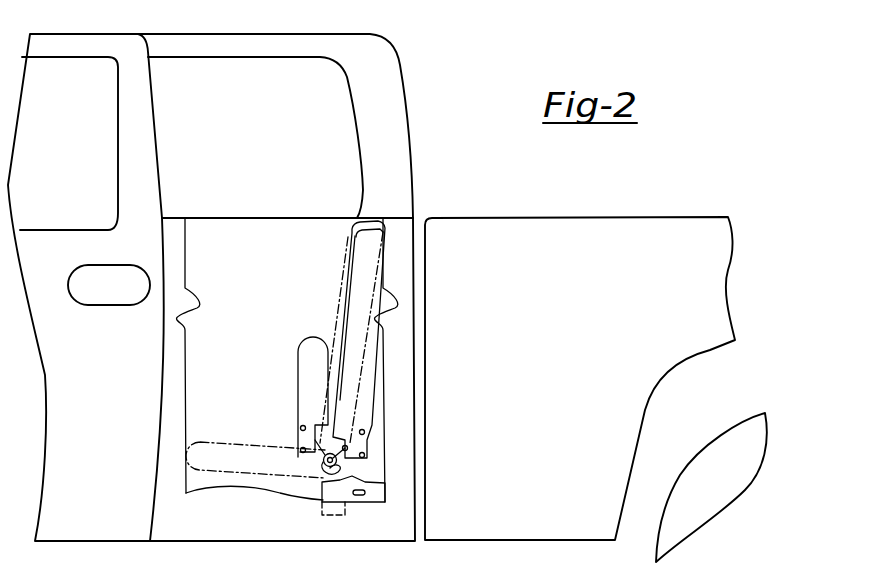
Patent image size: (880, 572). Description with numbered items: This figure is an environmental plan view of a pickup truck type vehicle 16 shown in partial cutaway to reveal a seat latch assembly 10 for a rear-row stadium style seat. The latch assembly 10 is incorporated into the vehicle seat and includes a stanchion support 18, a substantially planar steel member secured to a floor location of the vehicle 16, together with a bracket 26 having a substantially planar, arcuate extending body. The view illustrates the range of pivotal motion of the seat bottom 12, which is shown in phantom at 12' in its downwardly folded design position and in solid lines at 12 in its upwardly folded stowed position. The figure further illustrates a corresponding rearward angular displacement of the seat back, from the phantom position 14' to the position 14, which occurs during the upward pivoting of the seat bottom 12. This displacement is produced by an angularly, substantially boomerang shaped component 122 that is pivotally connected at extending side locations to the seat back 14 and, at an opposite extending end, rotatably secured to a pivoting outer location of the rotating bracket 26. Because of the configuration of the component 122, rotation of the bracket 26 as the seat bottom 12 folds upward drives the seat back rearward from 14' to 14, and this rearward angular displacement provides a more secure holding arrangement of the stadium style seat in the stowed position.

The seat latch assembly 10 is at (334, 368).
The seat bottom 12 is at (290, 382).
The seat bottom in design position 12' is at (255, 424).
The seat back 14 is at (331, 339).
The seat back in phantom position 14' is at (320, 337).
The vehicle 16 is at (534, 291).
The stanchion support 18 is at (380, 472).
The bracket 26 is at (313, 473).
The boomerang shaped component 122 is at (367, 452).